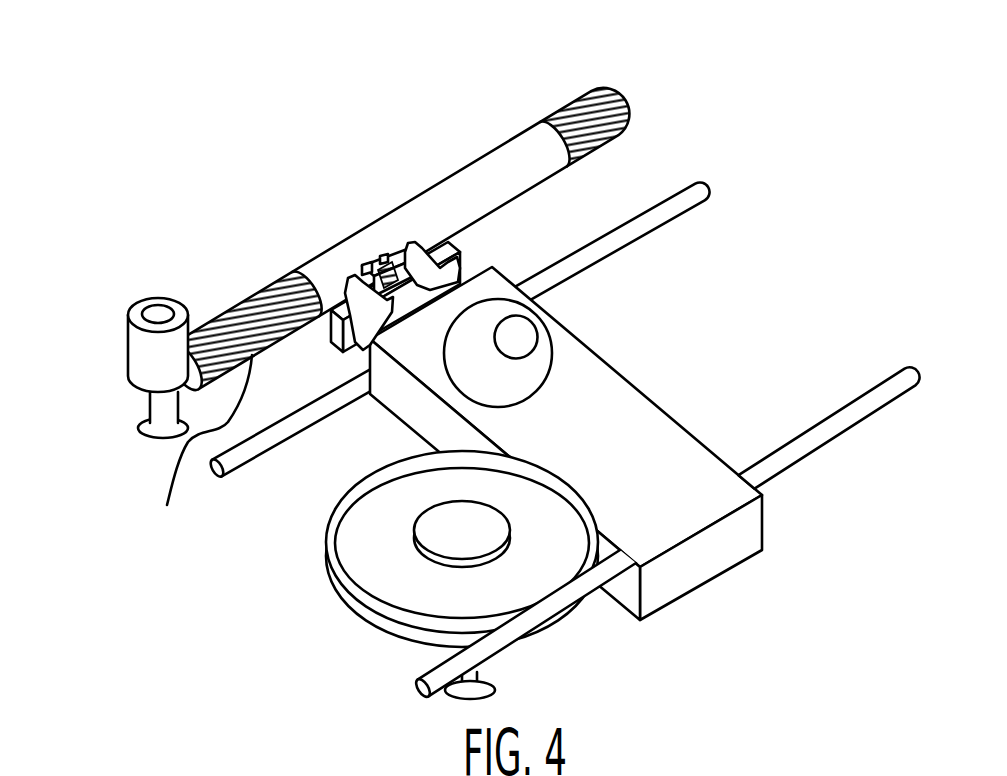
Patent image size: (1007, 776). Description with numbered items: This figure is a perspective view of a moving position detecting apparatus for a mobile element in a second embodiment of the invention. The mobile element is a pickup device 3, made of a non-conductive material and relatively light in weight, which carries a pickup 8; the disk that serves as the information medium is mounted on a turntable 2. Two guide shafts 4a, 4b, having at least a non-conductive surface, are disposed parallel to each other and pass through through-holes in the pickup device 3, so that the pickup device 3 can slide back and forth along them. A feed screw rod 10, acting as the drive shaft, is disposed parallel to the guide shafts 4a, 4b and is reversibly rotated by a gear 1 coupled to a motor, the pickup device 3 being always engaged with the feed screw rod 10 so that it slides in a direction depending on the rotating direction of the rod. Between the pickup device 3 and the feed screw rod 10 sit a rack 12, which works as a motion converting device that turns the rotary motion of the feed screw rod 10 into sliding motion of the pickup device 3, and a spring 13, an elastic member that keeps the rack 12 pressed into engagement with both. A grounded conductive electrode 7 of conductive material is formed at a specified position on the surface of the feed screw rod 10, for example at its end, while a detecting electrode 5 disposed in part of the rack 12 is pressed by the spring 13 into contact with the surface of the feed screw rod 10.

The gear 1 is at (131, 348).
The turntable 2 is at (372, 573).
The pickup device 3 is at (670, 452).
The guide shaft 4a is at (657, 220).
The guide shaft 4b is at (807, 447).
The detecting electrode 5 is at (364, 266).
The conductive electrode 7 is at (175, 480).
The pickup 8 is at (525, 340).
The feed screw rod 10 is at (629, 98).
The rack 12 is at (475, 262).
The spring 13 is at (380, 257).